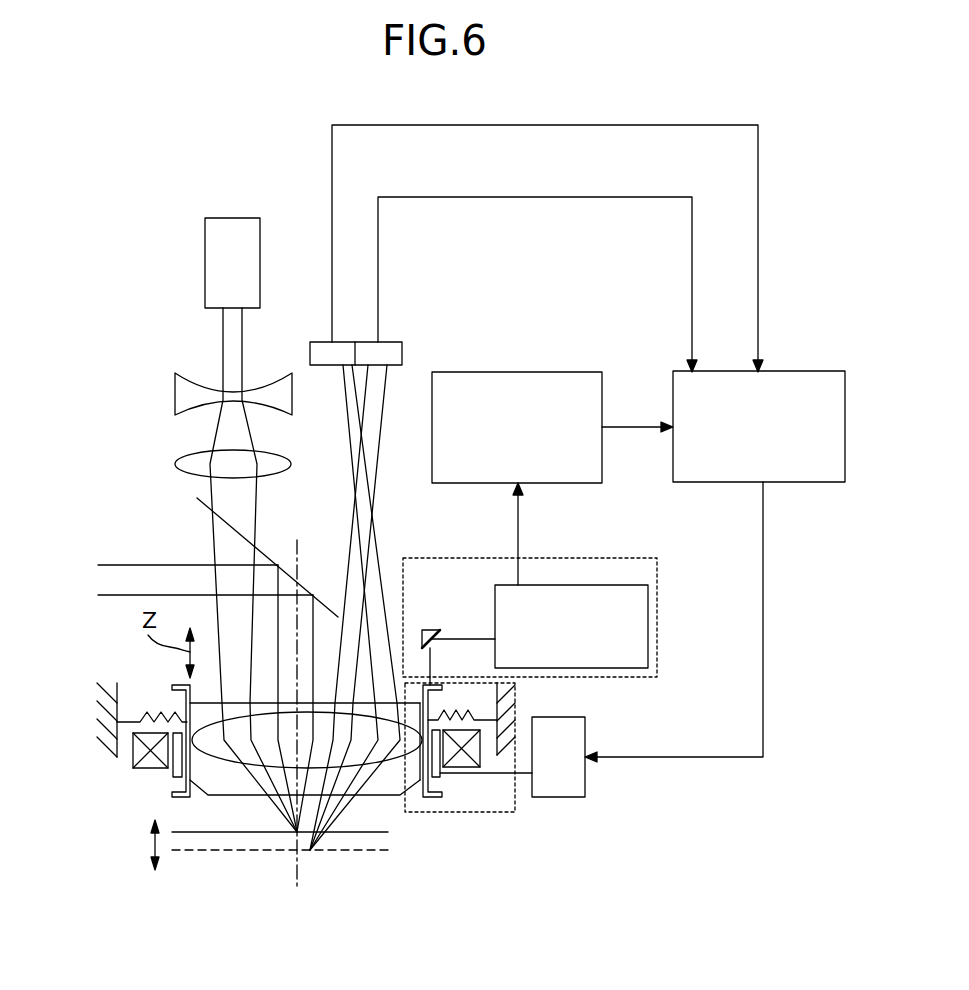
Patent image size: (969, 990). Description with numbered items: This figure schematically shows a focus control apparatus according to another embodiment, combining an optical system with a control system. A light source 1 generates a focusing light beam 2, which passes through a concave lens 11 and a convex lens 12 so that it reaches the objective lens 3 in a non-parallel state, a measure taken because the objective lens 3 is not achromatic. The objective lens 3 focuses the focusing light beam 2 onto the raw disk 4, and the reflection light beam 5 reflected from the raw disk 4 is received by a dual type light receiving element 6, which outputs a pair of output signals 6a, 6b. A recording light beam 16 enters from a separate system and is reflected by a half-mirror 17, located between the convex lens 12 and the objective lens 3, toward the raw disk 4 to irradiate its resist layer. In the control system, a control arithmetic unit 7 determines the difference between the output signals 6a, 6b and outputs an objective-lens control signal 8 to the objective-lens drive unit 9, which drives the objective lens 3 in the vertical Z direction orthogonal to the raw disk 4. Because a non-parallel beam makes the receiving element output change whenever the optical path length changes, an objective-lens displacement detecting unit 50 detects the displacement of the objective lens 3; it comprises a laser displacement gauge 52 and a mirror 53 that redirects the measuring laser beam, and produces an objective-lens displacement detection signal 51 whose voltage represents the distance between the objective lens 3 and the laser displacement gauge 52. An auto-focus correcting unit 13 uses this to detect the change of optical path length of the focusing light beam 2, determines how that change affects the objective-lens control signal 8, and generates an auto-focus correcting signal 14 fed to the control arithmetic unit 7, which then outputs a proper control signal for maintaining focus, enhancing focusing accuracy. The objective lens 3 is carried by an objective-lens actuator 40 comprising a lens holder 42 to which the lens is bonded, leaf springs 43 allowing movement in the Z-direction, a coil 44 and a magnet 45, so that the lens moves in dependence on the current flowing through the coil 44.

The light source 1 is at (205, 258).
The focusing light beam 2 is at (223, 348).
The objective lens 3 is at (380, 795).
The raw disk 4 is at (232, 852).
The reflection light beam 5 is at (376, 477).
The dual type light receiving element 6 is at (402, 352).
The output signal A 6a is at (378, 268).
The output signal B 6b is at (332, 158).
The control arithmetic unit 7 is at (785, 369).
The objective-lens control signal 8 is at (763, 615).
The objective-lens drive unit 9 is at (585, 777).
The concave lens 11 is at (175, 392).
The convex lens 12 is at (178, 460).
The auto-focus correcting unit 13 is at (517, 372).
The auto-focus correcting signal 14 is at (630, 427).
The recording light beam 16 is at (160, 565).
The half-mirror 17 is at (262, 552).
The objective-lens actuator 40 is at (460, 812).
The lens holder 42 is at (190, 798).
The leaf spring 43 is at (152, 714).
The coil 44 is at (180, 777).
The magnet 45 is at (133, 758).
The objective-lens displacement detecting unit 50 is at (657, 652).
The objective-lens displacement detection signal 51 is at (520, 525).
The laser displacement gauge 52 is at (648, 605).
The mirror 53 is at (432, 627).